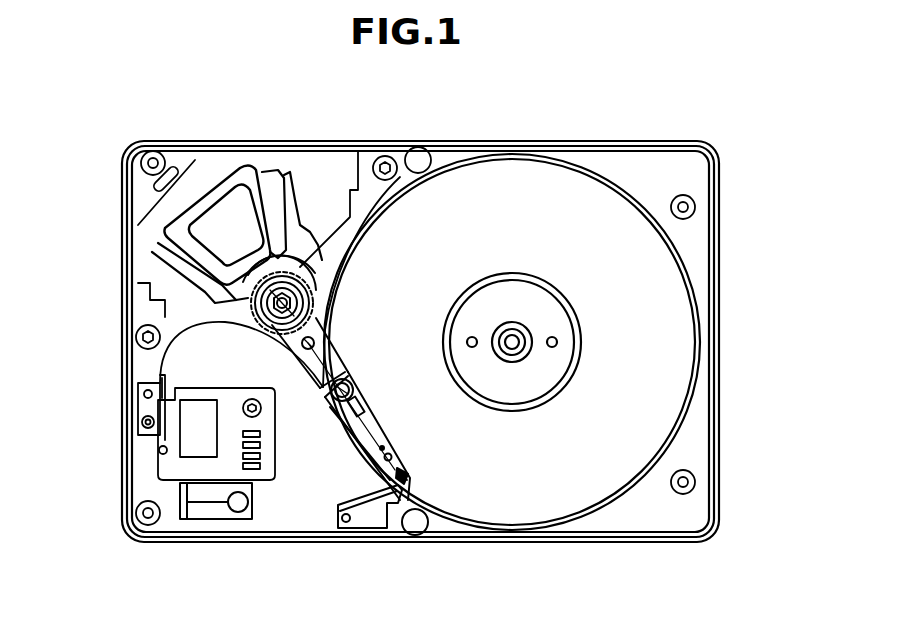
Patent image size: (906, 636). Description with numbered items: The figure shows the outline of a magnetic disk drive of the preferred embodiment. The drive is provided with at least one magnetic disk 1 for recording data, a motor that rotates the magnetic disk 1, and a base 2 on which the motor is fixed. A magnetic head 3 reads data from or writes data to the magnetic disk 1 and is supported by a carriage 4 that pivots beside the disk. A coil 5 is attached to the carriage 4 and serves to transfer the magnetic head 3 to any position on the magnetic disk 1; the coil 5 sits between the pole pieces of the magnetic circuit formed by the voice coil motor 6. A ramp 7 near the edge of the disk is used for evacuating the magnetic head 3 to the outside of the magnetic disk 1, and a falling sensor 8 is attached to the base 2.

The magnetic disk 1 is at (520, 198).
The base 2 is at (700, 255).
The magnetic head 3 is at (402, 474).
The carriage 4 is at (315, 390).
The coil 5 is at (222, 215).
The voice coil motor 6 is at (323, 178).
The ramp 7 is at (375, 512).
The falling sensor 8 is at (207, 505).